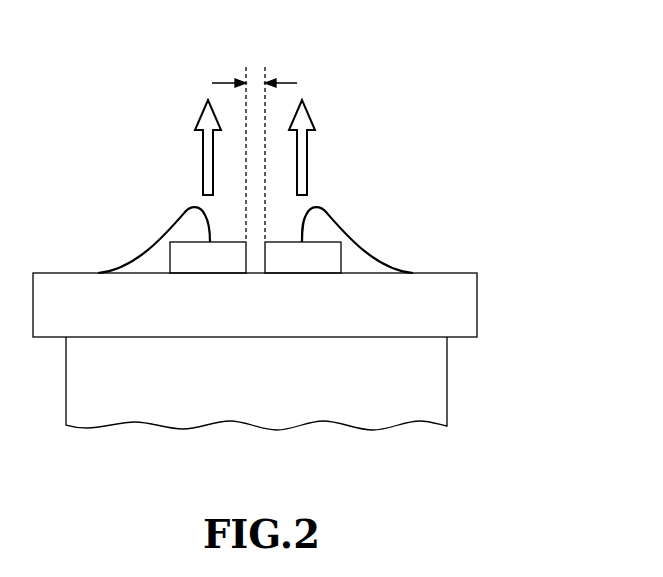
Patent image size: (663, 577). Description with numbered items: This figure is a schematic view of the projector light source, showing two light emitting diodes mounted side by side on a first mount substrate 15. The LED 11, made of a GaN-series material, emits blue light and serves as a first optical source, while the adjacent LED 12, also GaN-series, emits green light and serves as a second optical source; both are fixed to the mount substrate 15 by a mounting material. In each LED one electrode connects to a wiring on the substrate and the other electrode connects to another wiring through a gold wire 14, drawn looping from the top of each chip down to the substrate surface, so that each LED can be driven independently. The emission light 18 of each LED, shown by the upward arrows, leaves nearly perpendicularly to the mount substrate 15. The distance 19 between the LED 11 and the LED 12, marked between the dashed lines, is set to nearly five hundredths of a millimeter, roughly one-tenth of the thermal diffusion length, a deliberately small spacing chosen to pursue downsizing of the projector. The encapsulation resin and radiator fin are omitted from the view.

The LED 11 is at (187, 260).
The LED 12 is at (325, 262).
The gold wire 14 is at (347, 218).
The mount substrate 15 is at (448, 305).
The emission light 18 is at (203, 145).
The distance 19 is at (255, 83).